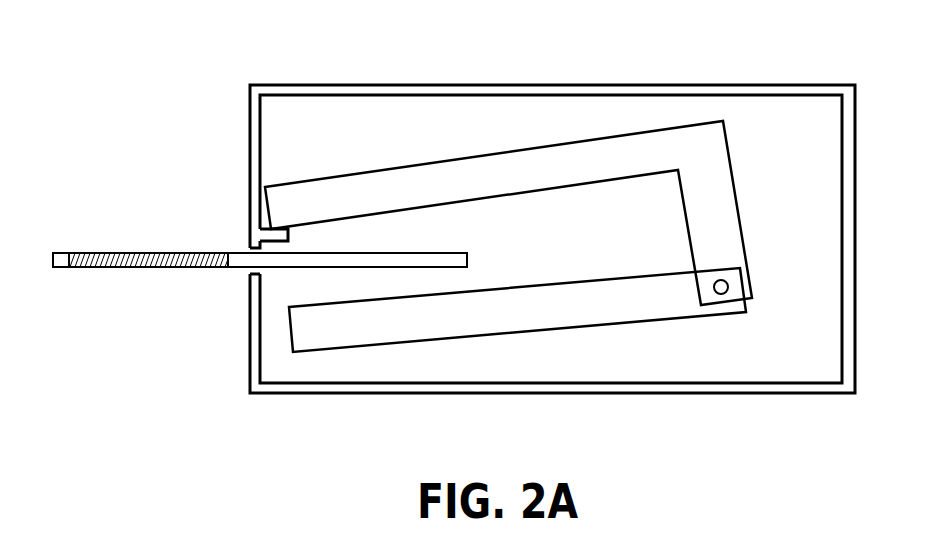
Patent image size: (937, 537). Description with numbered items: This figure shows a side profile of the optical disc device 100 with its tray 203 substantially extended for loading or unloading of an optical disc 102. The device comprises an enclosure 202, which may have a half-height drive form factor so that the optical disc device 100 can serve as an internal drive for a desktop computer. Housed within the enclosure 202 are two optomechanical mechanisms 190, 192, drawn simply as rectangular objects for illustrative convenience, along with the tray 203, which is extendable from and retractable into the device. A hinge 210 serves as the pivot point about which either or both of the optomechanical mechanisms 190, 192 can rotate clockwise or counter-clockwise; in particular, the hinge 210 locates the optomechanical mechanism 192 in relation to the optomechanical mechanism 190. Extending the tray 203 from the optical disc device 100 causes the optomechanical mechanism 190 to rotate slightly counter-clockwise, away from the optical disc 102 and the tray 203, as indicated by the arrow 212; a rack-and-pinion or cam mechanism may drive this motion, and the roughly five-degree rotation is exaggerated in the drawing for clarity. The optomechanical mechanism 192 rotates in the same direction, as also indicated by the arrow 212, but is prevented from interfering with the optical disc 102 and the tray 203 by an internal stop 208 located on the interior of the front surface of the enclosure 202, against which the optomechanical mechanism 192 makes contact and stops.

The optical disc device 100 is at (173, 361).
The optical disc 102 is at (142, 250).
The optomechanical mechanism 190 is at (547, 320).
The optomechanical mechanism 192 is at (555, 143).
The enclosure 202 is at (770, 83).
The tray 203 is at (60, 267).
The internal stop 208 is at (263, 223).
The hinge 210 is at (722, 295).
The arrow 212 is at (643, 308).